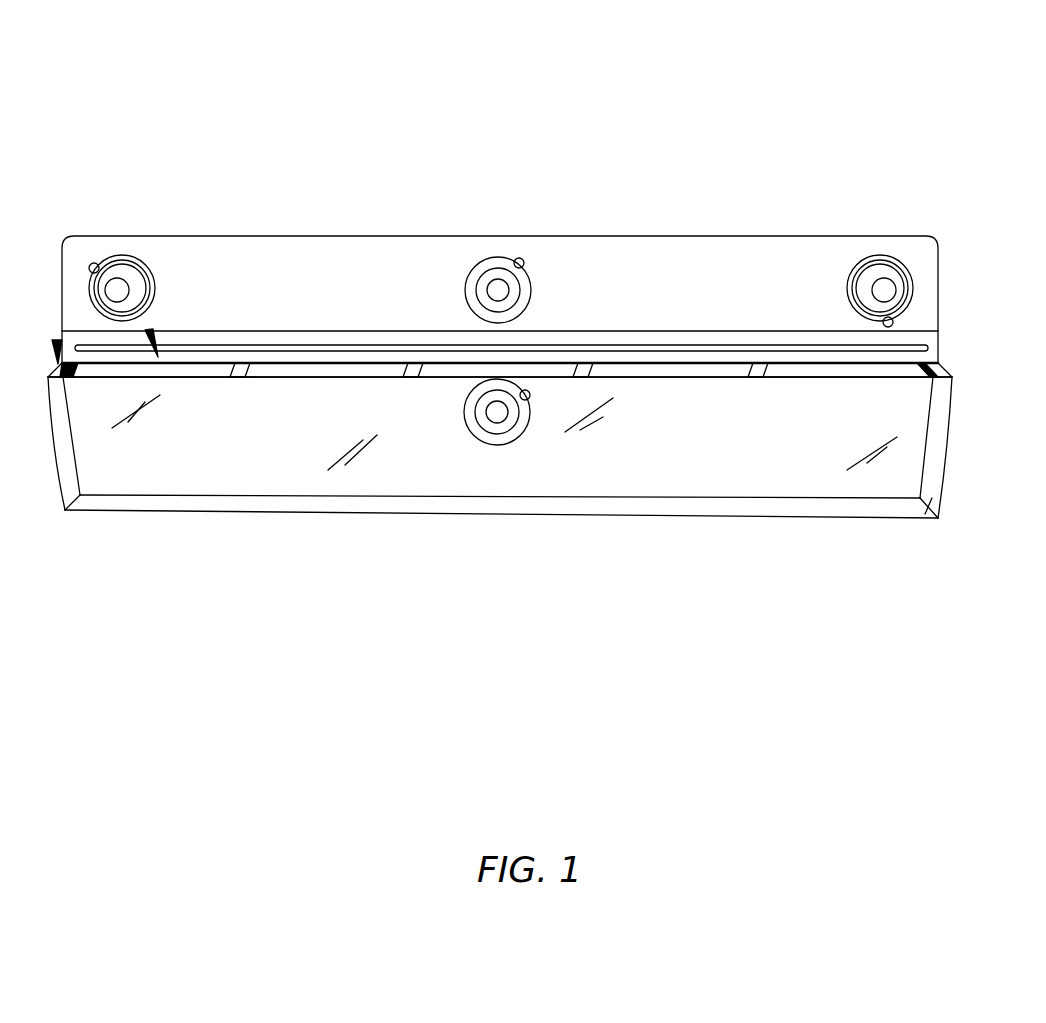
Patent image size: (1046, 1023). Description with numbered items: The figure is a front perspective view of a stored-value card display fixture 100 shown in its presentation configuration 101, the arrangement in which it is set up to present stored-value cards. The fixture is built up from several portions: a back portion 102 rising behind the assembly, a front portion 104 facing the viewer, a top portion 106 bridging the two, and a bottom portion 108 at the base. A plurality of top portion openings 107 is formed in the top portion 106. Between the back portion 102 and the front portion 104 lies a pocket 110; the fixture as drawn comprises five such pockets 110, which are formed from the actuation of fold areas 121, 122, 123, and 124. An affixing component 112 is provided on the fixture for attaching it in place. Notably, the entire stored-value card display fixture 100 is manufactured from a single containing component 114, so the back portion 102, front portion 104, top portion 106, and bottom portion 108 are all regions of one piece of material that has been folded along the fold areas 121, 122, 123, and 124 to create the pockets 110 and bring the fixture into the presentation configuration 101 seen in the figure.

The stored-value card display fixture 100 is at (220, 125).
The presentation configuration 101 is at (148, 330).
The back portion 102 is at (608, 283).
The front portion 104 is at (417, 462).
The top portion 106 is at (405, 362).
The top portion openings 107 is at (553, 368).
The bottom portion 108 is at (925, 518).
The pocket 110 is at (277, 462).
The affixing component 112 is at (498, 285).
The single containing component 114 is at (78, 512).
The fold area 121 is at (780, 518).
The fold area 122 is at (615, 497).
The fold area 123 is at (730, 362).
The fold area 124 is at (833, 378).